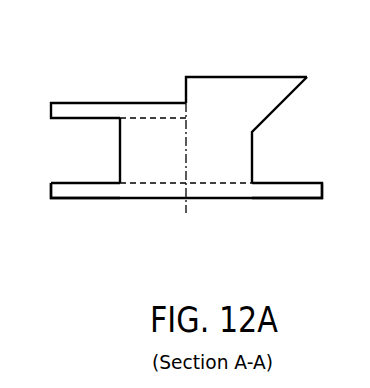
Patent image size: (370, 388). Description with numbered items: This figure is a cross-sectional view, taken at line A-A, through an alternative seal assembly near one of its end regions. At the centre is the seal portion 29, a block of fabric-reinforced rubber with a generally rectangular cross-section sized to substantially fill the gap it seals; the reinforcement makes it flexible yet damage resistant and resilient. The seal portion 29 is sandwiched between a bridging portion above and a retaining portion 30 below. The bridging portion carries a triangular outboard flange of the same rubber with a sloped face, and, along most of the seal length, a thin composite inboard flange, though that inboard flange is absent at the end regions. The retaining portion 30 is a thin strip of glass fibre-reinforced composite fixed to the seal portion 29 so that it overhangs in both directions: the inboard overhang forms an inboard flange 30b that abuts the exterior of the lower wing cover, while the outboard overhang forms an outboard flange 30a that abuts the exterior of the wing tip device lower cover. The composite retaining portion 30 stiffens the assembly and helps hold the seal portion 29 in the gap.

The seal portion 29 is at (165, 135).
The retaining portion 30 is at (202, 190).
The outboard flange 30a is at (277, 190).
The inboard flange 30b is at (70, 190).